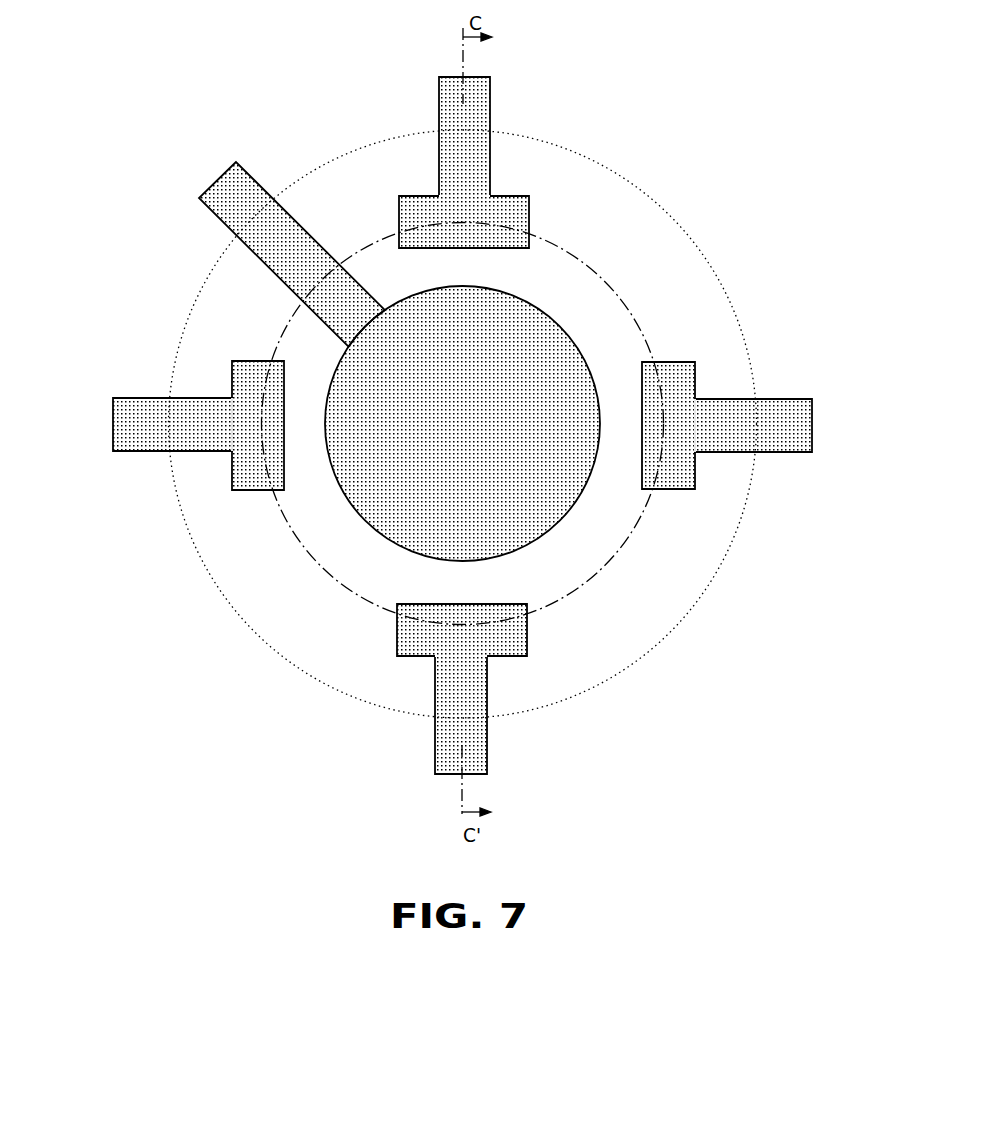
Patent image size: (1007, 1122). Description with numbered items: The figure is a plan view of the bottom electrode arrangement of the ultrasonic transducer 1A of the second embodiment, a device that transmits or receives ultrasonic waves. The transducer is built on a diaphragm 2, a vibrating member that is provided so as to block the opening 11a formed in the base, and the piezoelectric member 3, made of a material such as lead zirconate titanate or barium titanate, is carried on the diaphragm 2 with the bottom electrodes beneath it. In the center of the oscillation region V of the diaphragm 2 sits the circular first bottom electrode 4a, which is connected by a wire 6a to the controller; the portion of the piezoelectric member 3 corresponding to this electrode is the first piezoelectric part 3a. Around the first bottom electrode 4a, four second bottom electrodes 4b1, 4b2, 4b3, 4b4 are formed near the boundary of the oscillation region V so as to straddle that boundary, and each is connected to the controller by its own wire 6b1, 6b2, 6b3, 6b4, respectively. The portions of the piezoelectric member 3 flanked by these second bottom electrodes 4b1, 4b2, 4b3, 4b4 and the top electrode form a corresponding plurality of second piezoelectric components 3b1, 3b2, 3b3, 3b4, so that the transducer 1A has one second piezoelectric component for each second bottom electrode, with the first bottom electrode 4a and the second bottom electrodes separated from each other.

The ultrasonic transducer 1A is at (743, 142).
The diaphragm 2 is at (233, 122).
The piezoelectric member 3 is at (723, 280).
The first piezoelectric part 3a is at (358, 520).
The second piezoelectric component 3b1 is at (677, 372).
The second piezoelectric component 3b2 is at (400, 640).
The second piezoelectric component 3b3 is at (233, 465).
The second piezoelectric component 3b4 is at (420, 207).
The first bottom electrode 4a is at (547, 508).
The second bottom electrode 4b1 is at (680, 482).
The second bottom electrode 4b2 is at (515, 637).
The second bottom electrode 4b3 is at (243, 382).
The second bottom electrode 4b4 is at (502, 207).
The wire 6a is at (253, 178).
The wire 6b1 is at (792, 443).
The wire 6b2 is at (477, 737).
The wire 6b3 is at (135, 410).
The wire 6b4 is at (482, 95).
The opening 11a is at (586, 277).
The oscillation region V is at (540, 285).